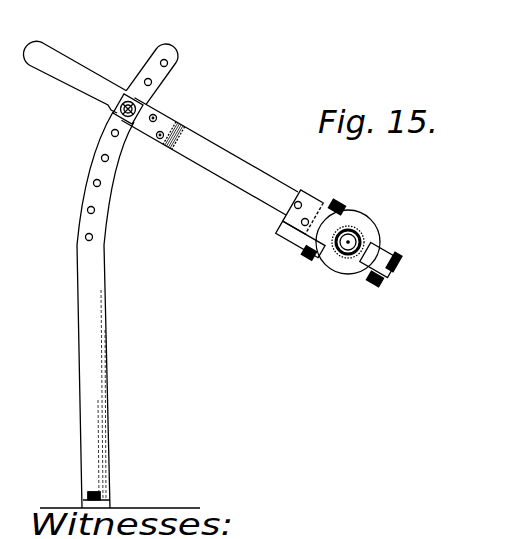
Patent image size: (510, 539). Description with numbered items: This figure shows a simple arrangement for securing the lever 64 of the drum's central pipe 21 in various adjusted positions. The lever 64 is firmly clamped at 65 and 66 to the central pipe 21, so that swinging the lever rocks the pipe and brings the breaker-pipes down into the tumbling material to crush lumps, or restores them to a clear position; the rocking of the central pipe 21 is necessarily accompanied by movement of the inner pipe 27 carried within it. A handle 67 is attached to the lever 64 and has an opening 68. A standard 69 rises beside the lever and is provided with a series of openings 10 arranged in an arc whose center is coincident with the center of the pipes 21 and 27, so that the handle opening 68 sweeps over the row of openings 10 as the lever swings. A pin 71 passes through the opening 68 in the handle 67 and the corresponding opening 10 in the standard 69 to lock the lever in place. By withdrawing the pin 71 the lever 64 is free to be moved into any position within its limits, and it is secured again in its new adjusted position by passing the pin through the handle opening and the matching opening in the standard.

The adjustment holes 10 is at (92, 210).
The central pipe 21 is at (355, 232).
The inner pipe 27 is at (365, 238).
The lever 64 is at (232, 165).
The clamp 65 is at (334, 203).
The clamp 66 is at (382, 284).
The handle 67 is at (78, 73).
The opening 68 is at (128, 100).
The standard 69 is at (97, 338).
The pin 71 is at (148, 108).